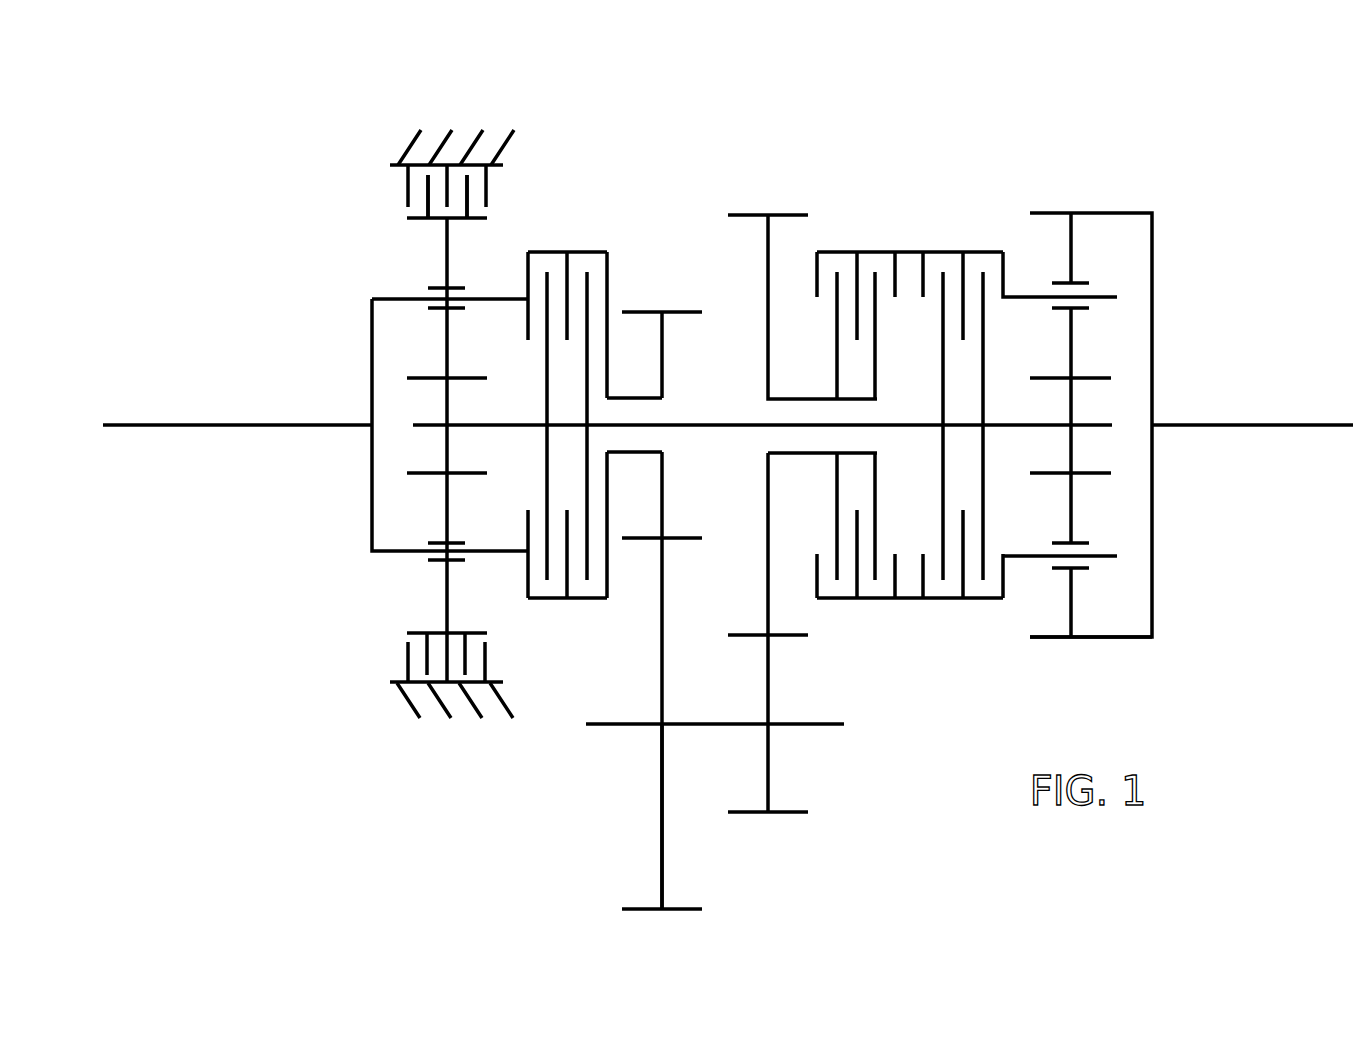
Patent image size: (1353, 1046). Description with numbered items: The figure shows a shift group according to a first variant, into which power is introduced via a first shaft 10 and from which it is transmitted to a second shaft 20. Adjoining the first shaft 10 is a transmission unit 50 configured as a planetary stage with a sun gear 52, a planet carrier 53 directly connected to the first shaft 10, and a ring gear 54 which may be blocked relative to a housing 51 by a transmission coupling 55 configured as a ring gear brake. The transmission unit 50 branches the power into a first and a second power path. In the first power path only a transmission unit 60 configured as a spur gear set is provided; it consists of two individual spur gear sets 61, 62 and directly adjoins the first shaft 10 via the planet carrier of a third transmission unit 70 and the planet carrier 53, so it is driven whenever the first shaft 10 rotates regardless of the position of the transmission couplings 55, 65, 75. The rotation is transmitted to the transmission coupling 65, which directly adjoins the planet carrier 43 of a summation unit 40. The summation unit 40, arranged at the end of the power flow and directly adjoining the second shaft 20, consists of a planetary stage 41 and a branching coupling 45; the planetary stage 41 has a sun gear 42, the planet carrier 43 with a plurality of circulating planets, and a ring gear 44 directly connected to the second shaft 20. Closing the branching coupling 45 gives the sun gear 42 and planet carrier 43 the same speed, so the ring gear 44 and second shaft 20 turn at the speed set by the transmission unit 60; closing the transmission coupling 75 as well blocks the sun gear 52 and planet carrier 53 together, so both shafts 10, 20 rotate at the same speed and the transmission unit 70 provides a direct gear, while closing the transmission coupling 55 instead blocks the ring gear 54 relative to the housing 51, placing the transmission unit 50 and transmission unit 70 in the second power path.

The first shaft 10 is at (196, 425).
The second shaft 20 is at (1298, 425).
The summation unit 40 is at (1052, 203).
The planetary stage 41 is at (1083, 198).
The sun gear 42 is at (1073, 457).
The planet carrier 43 is at (1073, 262).
The ring gear 44 is at (1100, 645).
The branching coupling 45 is at (938, 238).
The transmission unit 50 is at (432, 115).
The housing 51 is at (478, 125).
The sun gear 52 is at (438, 447).
The planet carrier 53 is at (445, 262).
The ring gear 54 is at (460, 223).
The transmission coupling 55 is at (395, 660).
The transmission unit 60 is at (620, 920).
The spur gear set 61 is at (646, 800).
The spur gear set 62 is at (795, 763).
The transmission coupling 65 is at (885, 252).
The transmission unit 70 is at (558, 232).
The transmission coupling 75 is at (608, 262).